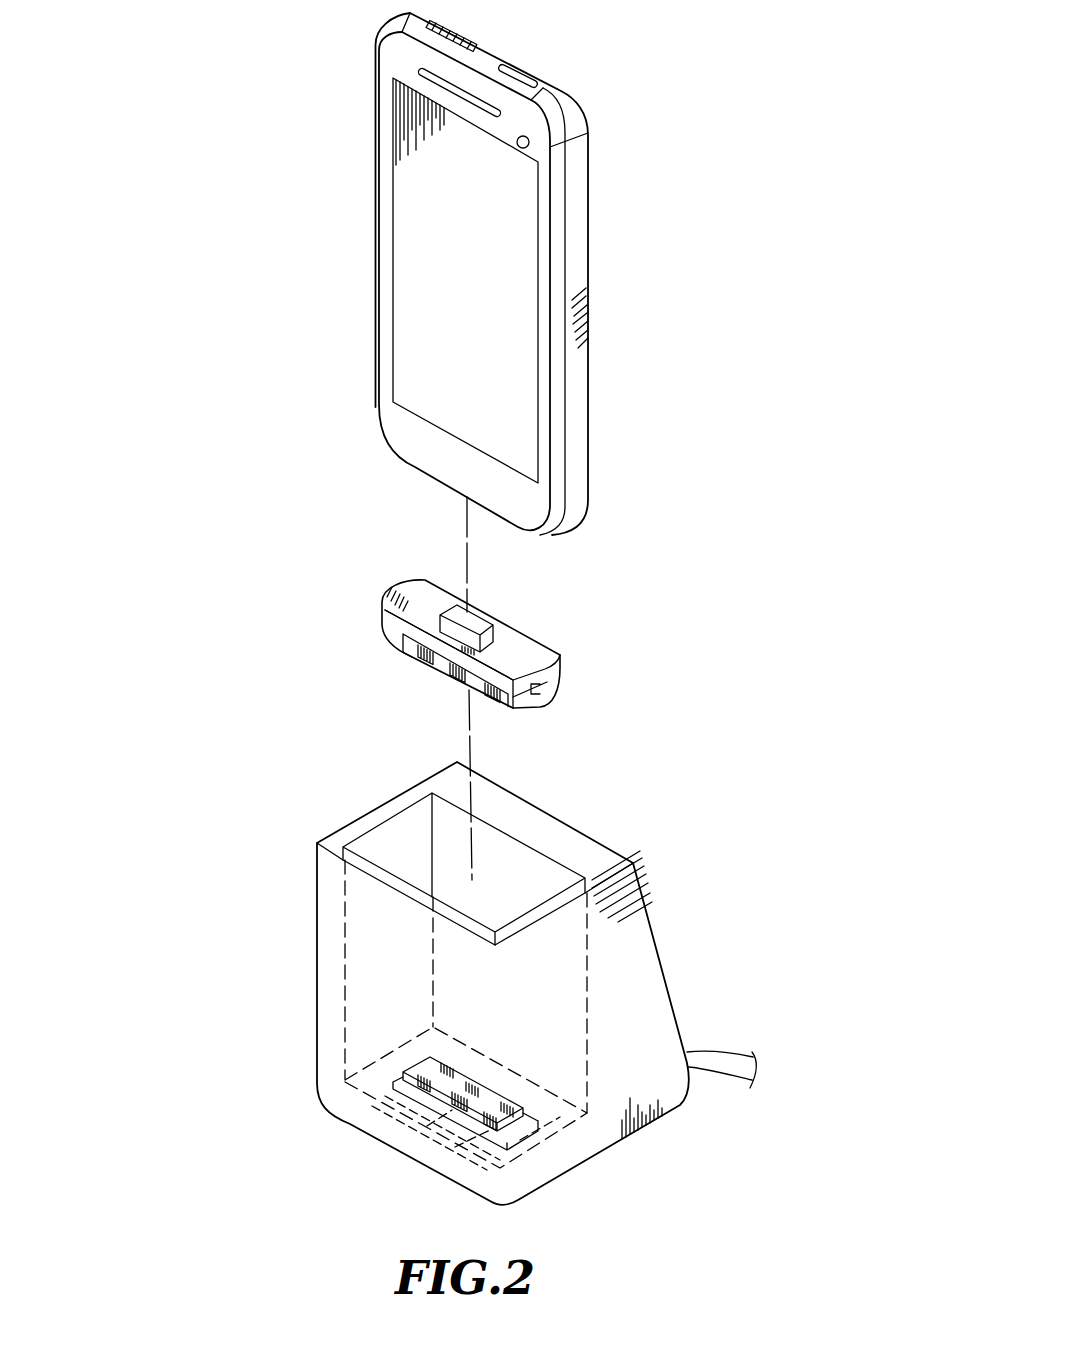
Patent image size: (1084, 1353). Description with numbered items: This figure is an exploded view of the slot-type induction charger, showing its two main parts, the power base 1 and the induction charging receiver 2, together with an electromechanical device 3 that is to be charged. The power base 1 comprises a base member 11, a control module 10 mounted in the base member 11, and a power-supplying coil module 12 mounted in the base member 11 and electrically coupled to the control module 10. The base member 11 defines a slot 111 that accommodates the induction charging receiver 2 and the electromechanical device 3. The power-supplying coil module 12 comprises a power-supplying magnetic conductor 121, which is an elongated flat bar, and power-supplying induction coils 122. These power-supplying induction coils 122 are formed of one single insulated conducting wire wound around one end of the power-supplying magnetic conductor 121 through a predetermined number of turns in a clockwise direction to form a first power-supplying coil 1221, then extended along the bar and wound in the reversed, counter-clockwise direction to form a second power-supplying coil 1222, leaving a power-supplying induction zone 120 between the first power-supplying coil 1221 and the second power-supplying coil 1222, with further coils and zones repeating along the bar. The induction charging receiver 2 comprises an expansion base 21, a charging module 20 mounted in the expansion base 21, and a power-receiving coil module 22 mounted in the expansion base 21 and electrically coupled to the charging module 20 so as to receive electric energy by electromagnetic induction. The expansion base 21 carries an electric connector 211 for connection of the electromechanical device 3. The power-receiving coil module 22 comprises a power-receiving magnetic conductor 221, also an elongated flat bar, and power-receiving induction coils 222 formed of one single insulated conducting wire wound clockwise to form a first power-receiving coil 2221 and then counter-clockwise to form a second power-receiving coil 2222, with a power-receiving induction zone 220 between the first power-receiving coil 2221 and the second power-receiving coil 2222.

The power base 1 is at (472, 999).
The control module 10 is at (395, 1146).
The base member 11 is at (630, 932).
The slot 111 is at (553, 876).
The power-supplying coil module 12 is at (605, 1143).
The power-supplying induction zone 120 is at (430, 1128).
The power-supplying magnetic conductor 121 is at (518, 1152).
The power-supplying induction coils 122 is at (344, 1145).
The first power-supplying coil 1221 is at (395, 1081).
The second power-supplying coil 1222 is at (462, 1113).
The induction charging receiver 2 is at (462, 650).
The charging module 20 is at (555, 683).
The expansion base 21 is at (392, 597).
The electric connector 211 is at (428, 608).
The power-receiving coil module 22 is at (421, 678).
The power-receiving induction zone 220 is at (486, 667).
The power-receiving magnetic conductor 221 is at (503, 708).
The power-receiving induction coils 222 is at (377, 691).
The first power-receiving coil 2221 is at (420, 658).
The second power-receiving coil 2222 is at (455, 674).
The electromechanical device 3 is at (583, 197).